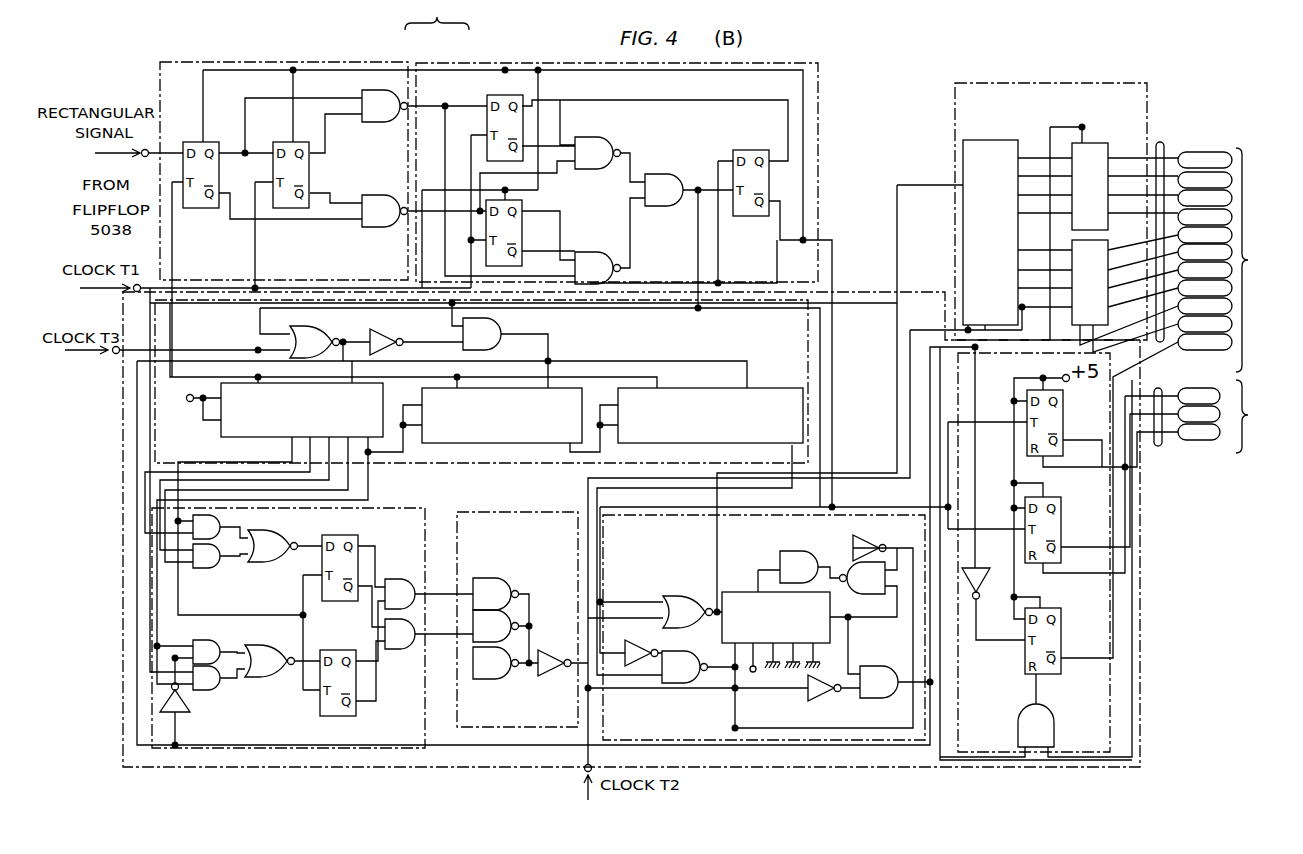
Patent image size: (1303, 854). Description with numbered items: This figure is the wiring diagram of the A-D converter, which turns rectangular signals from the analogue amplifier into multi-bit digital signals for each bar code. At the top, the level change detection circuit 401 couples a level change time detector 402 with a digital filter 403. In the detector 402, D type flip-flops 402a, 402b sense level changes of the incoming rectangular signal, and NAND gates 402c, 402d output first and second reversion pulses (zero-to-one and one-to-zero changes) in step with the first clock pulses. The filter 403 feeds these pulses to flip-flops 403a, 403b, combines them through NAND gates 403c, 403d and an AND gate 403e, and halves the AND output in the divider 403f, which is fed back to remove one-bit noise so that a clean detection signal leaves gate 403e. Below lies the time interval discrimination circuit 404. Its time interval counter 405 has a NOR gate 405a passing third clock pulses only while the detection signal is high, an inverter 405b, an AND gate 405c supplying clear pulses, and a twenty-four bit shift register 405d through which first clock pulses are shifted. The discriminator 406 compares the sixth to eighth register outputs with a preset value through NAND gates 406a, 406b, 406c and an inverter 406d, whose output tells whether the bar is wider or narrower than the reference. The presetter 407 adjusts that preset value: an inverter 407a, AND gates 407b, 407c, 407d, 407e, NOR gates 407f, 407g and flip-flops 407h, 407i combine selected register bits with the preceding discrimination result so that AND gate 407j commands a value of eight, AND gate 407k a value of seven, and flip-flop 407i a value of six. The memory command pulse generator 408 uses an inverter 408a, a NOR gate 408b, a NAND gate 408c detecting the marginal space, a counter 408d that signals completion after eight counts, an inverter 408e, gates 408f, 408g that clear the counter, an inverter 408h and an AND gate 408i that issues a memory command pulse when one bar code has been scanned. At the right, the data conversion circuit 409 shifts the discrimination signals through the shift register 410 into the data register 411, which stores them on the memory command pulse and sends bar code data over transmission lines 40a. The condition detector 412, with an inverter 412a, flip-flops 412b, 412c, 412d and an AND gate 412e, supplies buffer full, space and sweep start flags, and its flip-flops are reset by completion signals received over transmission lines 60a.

The level change detection circuit 401 is at (437, 15).
The level change time detector 402 is at (400, 62).
The D type flip-flop 402a is at (210, 142).
The D type flip-flop 402b is at (285, 142).
The NAND gate 402c is at (378, 122).
The NAND gate 402d is at (366, 227).
The digital filter 403 is at (435, 63).
The D type flip-flop 403a is at (523, 104).
The D type flip-flop 403b is at (522, 225).
The NAND gate 403c is at (610, 140).
The NAND gate 403d is at (602, 252).
The AND gate 403e is at (675, 168).
The ½ divider 403f is at (750, 150).
The time interval discrimination circuit 404 is at (293, 767).
The time interval counter 405 is at (808, 325).
The NOR gate 405a is at (300, 330).
The inverter 405b is at (383, 332).
The AND gate 405c is at (502, 325).
The 24 bits shift register 405d is at (383, 410).
The discriminator 406 is at (470, 727).
The NAND gate 406a is at (495, 578).
The NAND gate 406b is at (520, 620).
The NAND gate 406c is at (492, 679).
The inverter 406d is at (550, 676).
The presetter 407 is at (358, 748).
The inverter 407a is at (185, 712).
The AND gate 407b is at (222, 518).
The AND gate 407c is at (210, 568).
The AND gate 407d is at (213, 641).
The AND gate 407e is at (212, 690).
The NOR gate 407f is at (275, 540).
The NOR gate 407g is at (272, 677).
The D type flip-flop 407h is at (335, 601).
The D type flip-flop 407i is at (320, 716).
The AND gate 407j is at (400, 579).
The AND gate 407k is at (400, 649).
The memory command pulse generator 408 is at (601, 716).
The inverter 408a is at (634, 640).
The NOR gate 408b is at (688, 596).
The NAND gate 408c is at (680, 683).
The counter 408d is at (740, 592).
The inverter 408e is at (862, 540).
The NAND gate 408f is at (868, 594).
The NAND gate 408g is at (800, 547).
The inverter 408h is at (810, 700).
The AND gate 408i is at (878, 698).
The data conversion circuit 409 is at (1035, 83).
The shift register 410 is at (988, 140).
The data register 411 is at (1105, 143).
The condition detector 412 is at (1110, 675).
The inverter 412a is at (980, 570).
The D type flip-flop 412b is at (1025, 665).
The D type flip-flop 412c is at (1061, 528).
The D type flip-flop 412d is at (1063, 420).
The AND gate 412e is at (1054, 735).
The transmission lines 40a is at (1162, 142).
The transmission lines 60a is at (1160, 446).